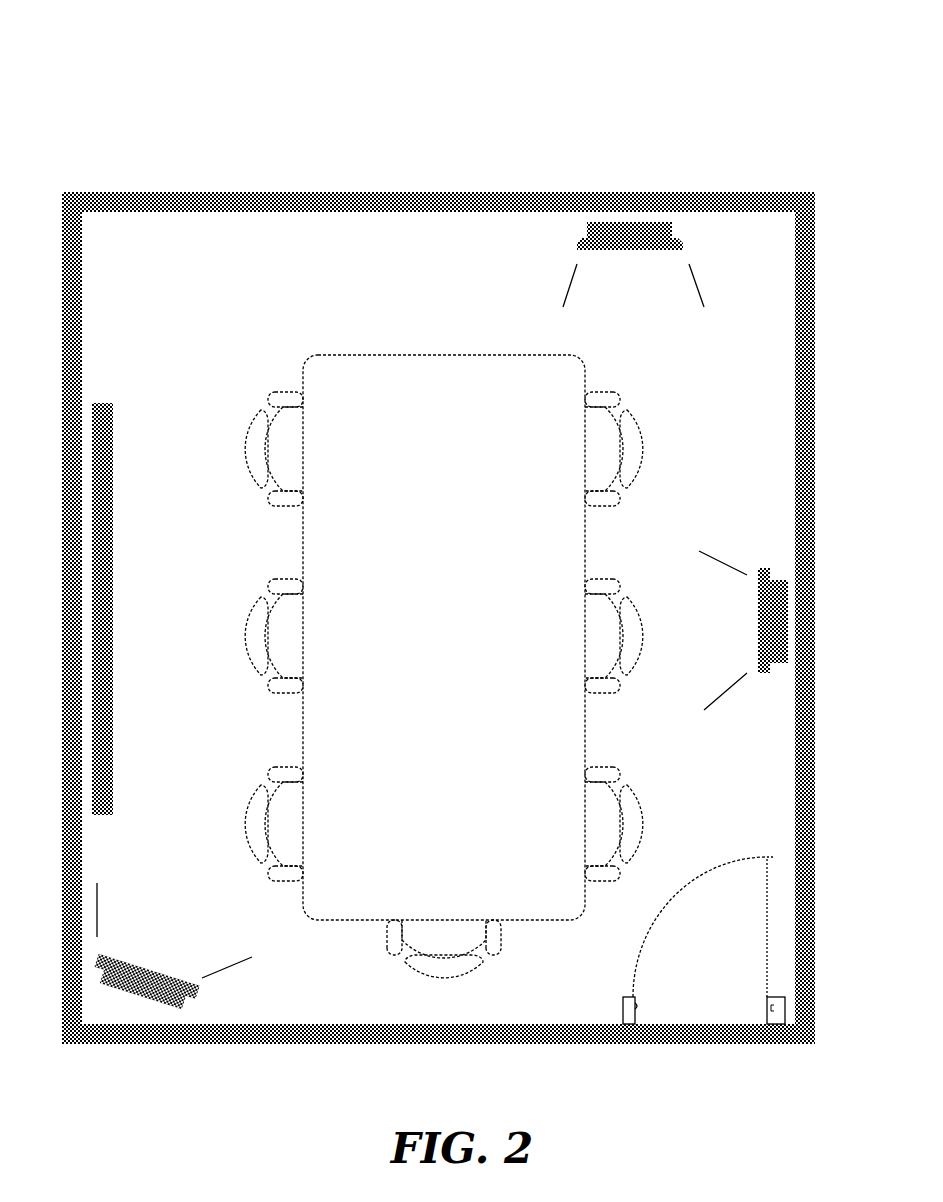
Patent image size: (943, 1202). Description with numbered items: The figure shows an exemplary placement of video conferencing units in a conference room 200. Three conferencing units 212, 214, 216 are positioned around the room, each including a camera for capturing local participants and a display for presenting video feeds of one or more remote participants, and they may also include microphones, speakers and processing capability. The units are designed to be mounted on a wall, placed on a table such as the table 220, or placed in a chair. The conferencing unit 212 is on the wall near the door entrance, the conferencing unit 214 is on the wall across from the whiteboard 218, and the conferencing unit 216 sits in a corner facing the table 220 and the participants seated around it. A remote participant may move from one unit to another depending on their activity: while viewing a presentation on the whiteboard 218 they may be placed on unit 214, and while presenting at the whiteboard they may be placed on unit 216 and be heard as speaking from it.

The conference room 200 is at (737, 58).
The conferencing unit 212 is at (616, 176).
The conferencing unit 214 is at (768, 535).
The conferencing unit 216 is at (198, 965).
The whiteboard 218 is at (145, 409).
The table 220 is at (444, 666).